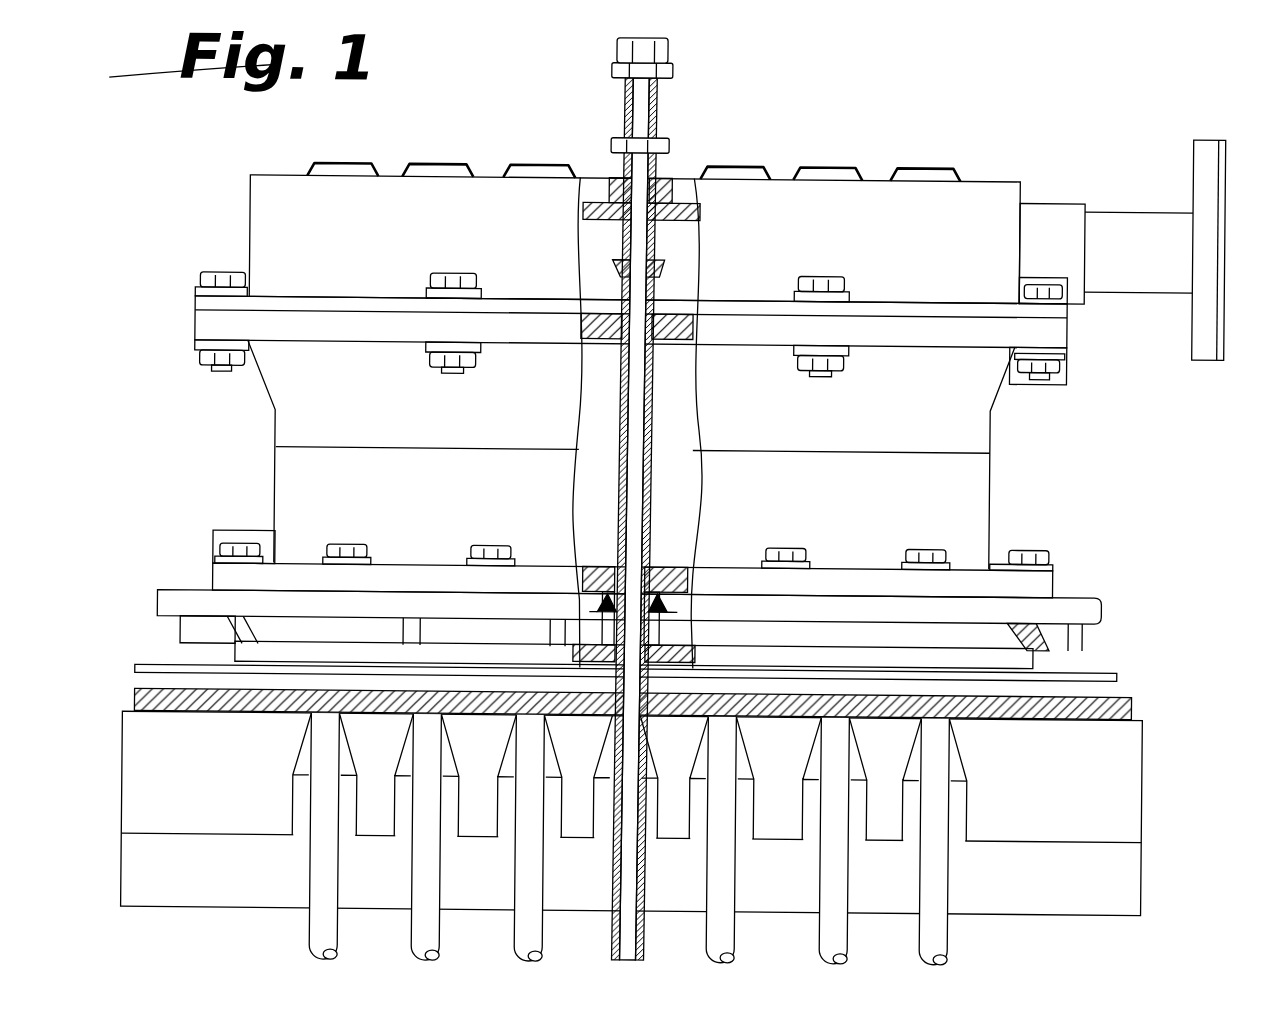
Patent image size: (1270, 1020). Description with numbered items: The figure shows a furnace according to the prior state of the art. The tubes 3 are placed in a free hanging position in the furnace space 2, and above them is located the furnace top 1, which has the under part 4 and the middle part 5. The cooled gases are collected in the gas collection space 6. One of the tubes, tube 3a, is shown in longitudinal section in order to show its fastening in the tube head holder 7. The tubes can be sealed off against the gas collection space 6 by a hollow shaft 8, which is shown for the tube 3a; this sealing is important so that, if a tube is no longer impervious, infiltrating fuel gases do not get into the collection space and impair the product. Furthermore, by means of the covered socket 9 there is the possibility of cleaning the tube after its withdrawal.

The furnace top 1 is at (268, 400).
The furnace space 2 is at (122, 776).
The tubes 3 is at (922, 939).
The tube 3a is at (618, 950).
The under part 4 is at (1075, 651).
The middle part 5 is at (995, 497).
The gas collection space 6 is at (1222, 357).
The tube head holder 7 is at (695, 568).
The hollow shaft 8 is at (658, 128).
The covered socket 9 is at (668, 50).